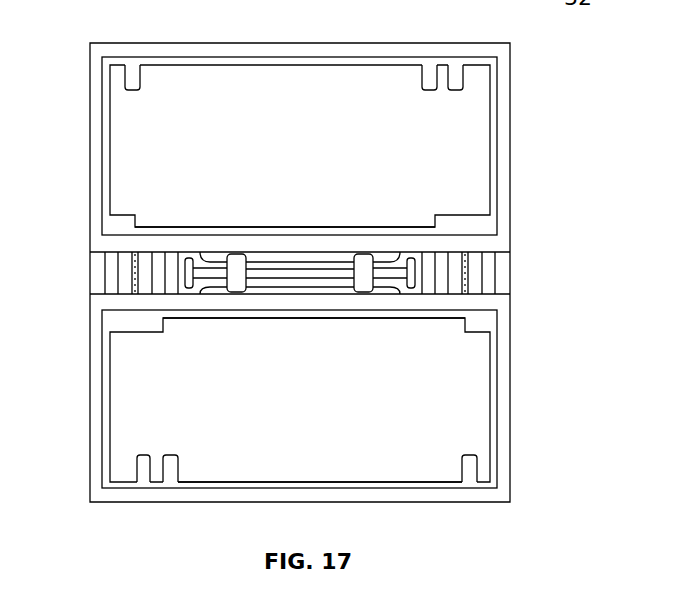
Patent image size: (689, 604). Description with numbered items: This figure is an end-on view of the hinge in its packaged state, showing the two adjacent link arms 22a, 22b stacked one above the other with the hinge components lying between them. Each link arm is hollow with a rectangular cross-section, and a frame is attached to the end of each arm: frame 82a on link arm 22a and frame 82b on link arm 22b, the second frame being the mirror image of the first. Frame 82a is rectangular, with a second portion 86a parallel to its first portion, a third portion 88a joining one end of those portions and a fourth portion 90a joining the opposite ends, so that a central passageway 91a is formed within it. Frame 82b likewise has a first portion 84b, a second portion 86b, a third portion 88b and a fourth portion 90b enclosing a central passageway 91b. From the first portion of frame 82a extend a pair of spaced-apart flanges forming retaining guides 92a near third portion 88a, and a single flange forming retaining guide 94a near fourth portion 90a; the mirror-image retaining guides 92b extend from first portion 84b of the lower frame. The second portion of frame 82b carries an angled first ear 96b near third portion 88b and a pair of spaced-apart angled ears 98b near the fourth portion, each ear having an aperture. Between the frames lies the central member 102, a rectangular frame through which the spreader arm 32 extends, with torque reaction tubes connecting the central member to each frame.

The link arm 22a is at (352, 41).
The link arm 22b is at (309, 505).
The spreader arm 32 is at (339, 263).
The frame 82a is at (313, 221).
The frame 82b is at (311, 326).
The first portion 84b is at (249, 67).
The second portion 86a is at (240, 226).
The second portion 86b is at (388, 320).
The third portion 88a is at (490, 140).
The third portion 88b is at (99, 433).
The fourth portion 90a is at (111, 128).
The fourth portion 90b is at (498, 418).
The central passageway 91a is at (282, 160).
The central passageway 91b is at (282, 410).
The retaining guides 92a is at (429, 78).
The retaining guides 92b is at (170, 472).
The retaining guide 94a is at (131, 80).
The first ear 96b is at (158, 262).
The ears 98b is at (478, 270).
The central member 102 is at (274, 291).